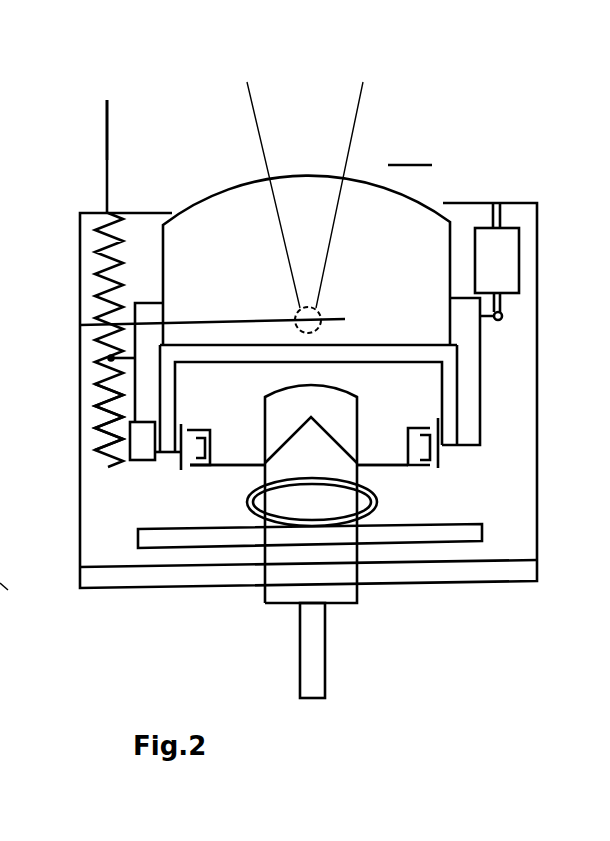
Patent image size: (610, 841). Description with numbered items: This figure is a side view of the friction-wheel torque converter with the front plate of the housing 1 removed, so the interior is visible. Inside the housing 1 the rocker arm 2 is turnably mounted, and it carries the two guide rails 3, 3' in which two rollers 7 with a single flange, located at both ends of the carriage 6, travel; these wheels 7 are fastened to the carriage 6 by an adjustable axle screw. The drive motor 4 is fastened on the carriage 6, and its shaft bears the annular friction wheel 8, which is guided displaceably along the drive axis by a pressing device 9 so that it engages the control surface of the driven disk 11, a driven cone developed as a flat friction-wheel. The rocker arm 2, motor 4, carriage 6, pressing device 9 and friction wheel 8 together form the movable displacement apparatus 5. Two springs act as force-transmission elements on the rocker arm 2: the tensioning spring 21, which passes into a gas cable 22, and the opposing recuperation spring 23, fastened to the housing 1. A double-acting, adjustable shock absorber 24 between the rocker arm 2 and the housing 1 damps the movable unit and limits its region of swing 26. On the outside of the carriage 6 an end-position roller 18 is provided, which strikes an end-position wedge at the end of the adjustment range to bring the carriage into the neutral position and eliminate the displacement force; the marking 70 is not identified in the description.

The housing 1 is at (140, 237).
The rocker arm 2 is at (150, 322).
The guide rail 3 is at (191, 549).
The guide rail 3' is at (425, 554).
The motor 4 is at (245, 230).
The displacement apparatus 5 is at (410, 151).
The carriage 6 is at (452, 400).
The rollers 7 is at (185, 455).
The annular friction wheel 8 is at (277, 526).
The pressing device 9 is at (322, 447).
The driven disk 11 is at (233, 537).
The end-position roller 18 is at (112, 473).
The tensioning spring 21 is at (100, 248).
The gas cable 22 is at (105, 131).
The recuperation spring 23 is at (112, 425).
The shock absorber 24 is at (497, 268).
The region of swing 26 is at (363, 84).
The reference 70 is at (12, 601).